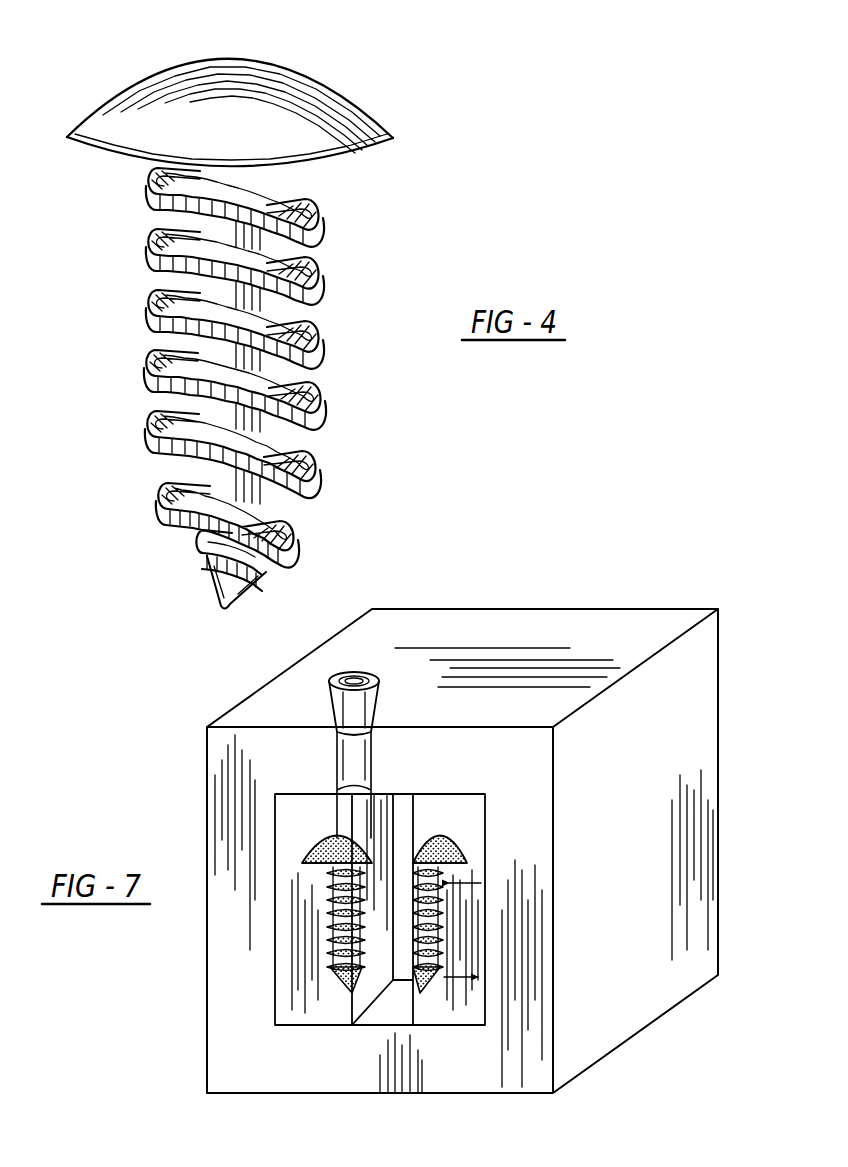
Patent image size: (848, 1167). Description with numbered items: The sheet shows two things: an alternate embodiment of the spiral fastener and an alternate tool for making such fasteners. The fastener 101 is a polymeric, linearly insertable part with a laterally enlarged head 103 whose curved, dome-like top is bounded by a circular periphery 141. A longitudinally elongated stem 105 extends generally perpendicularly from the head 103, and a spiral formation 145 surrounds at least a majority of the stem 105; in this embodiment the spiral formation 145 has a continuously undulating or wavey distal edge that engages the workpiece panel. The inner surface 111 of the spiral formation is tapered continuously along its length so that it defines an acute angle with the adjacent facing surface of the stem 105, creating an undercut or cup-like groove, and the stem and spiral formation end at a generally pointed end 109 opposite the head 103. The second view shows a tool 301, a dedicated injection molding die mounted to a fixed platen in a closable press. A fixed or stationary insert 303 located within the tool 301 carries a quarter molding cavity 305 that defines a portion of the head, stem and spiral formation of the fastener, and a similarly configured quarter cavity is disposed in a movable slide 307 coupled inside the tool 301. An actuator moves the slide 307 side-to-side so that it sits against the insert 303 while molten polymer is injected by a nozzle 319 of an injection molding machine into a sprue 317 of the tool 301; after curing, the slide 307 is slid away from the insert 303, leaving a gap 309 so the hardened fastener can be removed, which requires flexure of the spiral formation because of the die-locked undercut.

In FIG. 4, the fastener 101 is at (128, 56).
In FIG. 4, the head 103 is at (325, 123).
In FIG. 4, the circular periphery 141 is at (70, 137).
In FIG. 4, the stem 105 is at (253, 275).
In FIG. 4, the spiral formation 145 is at (300, 394).
In FIG. 4, the inner surface 111 is at (293, 450).
In FIG. 4, the pointed end 109 is at (217, 612).
In FIG. 7, the tool 301 is at (530, 623).
In FIG. 7, the insert 303 is at (313, 995).
In FIG. 7, the quarter molding cavity 305 is at (327, 913).
In FIG. 7, the slide 307 is at (475, 998).
In FIG. 7, the clearance gap 309 is at (440, 923).
In FIG. 7, the sprue 317 is at (357, 757).
In FIG. 7, the nozzle 319 is at (332, 699).